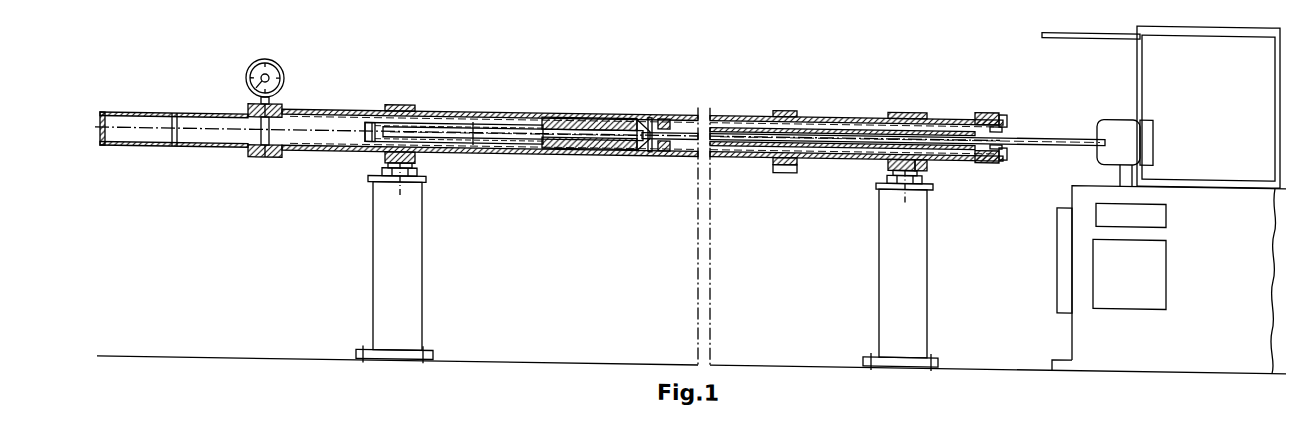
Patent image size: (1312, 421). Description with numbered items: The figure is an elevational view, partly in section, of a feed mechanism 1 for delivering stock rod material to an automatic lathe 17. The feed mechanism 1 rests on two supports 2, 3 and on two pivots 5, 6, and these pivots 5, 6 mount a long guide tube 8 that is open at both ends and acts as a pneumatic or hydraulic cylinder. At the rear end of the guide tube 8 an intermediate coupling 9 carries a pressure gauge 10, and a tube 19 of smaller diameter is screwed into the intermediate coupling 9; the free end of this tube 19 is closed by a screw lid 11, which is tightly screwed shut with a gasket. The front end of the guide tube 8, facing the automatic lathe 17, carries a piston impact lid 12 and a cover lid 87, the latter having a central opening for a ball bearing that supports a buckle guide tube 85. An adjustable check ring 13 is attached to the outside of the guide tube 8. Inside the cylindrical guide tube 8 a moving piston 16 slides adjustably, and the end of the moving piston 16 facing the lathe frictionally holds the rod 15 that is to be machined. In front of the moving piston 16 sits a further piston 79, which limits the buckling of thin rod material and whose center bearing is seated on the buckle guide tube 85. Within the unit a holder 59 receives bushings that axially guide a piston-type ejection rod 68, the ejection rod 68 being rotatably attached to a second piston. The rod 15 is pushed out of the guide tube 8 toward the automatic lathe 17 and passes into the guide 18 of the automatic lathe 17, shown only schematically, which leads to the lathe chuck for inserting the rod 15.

The feed mechanism 1 is at (708, 81).
The support 2 is at (383, 253).
The support 3 is at (888, 256).
The pivot 5 is at (393, 98).
The pivot 6 is at (900, 98).
The guide tube 8 is at (845, 143).
The intermediate coupling 9 is at (273, 148).
The pressure gauge 10 is at (282, 67).
The screw lid 11 is at (103, 139).
The piston impact lid 12 is at (986, 98).
The adjustable check ring 13 is at (773, 153).
The rod 15 is at (684, 126).
The moving piston 16 is at (577, 108).
The automatic lathe 17 is at (1199, 311).
The guide 18 is at (1107, 108).
The tube 19 is at (203, 142).
The holder 59 is at (638, 114).
The ejection rod 68 is at (515, 124).
The piston 79 is at (663, 142).
The buckle guide tube 85 is at (828, 117).
The cover lid 87 is at (986, 98).